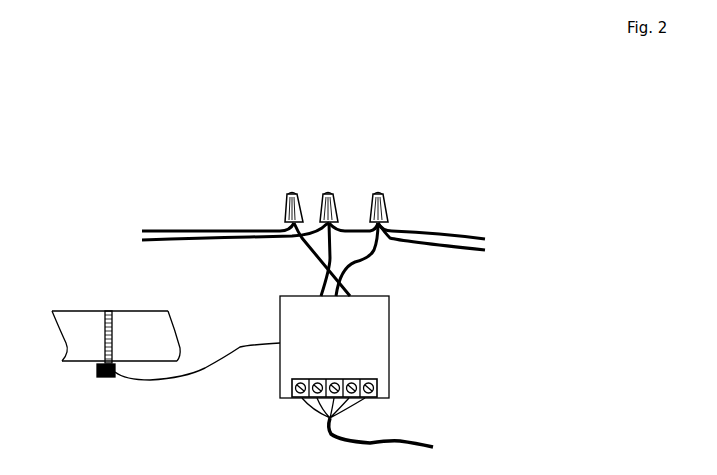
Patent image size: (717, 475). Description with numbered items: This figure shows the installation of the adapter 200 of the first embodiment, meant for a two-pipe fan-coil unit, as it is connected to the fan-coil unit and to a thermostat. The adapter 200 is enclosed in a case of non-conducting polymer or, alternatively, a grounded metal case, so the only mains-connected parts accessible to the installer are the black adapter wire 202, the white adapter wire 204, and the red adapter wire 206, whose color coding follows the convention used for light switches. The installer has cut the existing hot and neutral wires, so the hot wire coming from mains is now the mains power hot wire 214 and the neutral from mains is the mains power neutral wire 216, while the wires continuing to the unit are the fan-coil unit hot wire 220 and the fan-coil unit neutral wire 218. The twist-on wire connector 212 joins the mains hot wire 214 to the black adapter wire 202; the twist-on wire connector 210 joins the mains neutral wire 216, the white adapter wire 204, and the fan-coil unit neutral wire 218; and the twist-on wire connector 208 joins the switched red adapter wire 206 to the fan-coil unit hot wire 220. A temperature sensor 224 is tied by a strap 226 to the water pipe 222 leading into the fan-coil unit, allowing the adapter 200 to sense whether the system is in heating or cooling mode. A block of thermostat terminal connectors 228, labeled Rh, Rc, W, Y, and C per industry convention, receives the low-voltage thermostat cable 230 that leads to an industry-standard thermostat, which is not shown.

The adapter 200 is at (276, 302).
The black adapter wire 202 is at (372, 262).
The white adapter wire 204 is at (323, 268).
The red adapter wire 206 is at (312, 246).
The twist-on wire connector 208 is at (292, 193).
The twist-on wire connector 210 is at (328, 193).
The twist-on wire connector 212 is at (378, 193).
The mains power hot wire 214 is at (487, 251).
The mains power neutral wire 216 is at (488, 236).
The fan-coil unit neutral wire 218 is at (142, 231).
The fan-coil unit hot wire 220 is at (142, 241).
The water pipe into fan-coil unit 222 is at (57, 337).
The temperature sensor 224 is at (95, 373).
The strap 226 is at (108, 307).
The thermostat terminal connectors 228 is at (380, 383).
The thermostat cable 230 is at (433, 440).